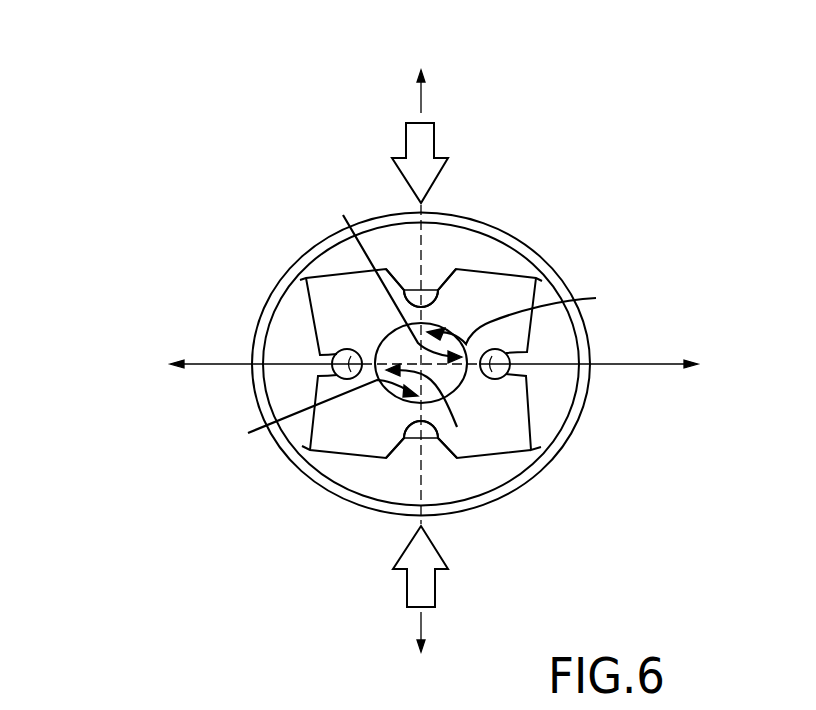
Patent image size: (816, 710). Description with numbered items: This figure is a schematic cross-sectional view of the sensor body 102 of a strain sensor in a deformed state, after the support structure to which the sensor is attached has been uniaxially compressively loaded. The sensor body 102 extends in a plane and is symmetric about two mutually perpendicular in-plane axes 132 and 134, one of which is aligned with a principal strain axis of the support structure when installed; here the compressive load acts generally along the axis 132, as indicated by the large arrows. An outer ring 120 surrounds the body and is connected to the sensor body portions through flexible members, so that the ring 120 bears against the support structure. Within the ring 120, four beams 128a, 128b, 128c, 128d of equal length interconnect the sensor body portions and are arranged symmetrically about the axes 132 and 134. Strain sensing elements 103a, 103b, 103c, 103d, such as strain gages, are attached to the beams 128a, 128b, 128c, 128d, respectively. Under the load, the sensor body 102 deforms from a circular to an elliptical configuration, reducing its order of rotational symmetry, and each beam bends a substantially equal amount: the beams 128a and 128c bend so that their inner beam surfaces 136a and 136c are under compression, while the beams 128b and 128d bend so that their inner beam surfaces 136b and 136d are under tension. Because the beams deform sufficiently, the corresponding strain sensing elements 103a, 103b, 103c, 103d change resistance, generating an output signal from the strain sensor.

The sensor body 102 is at (590, 260).
The ring 120 is at (502, 232).
The beam 128a is at (432, 288).
The beam 128b is at (345, 362).
The beam 128c is at (428, 444).
The beam 128d is at (494, 361).
The axis 132 is at (420, 345).
The axis 134 is at (456, 364).
The strain sensing element 103a is at (428, 323).
The strain sensing element 103b is at (375, 364).
The strain sensing element 103c is at (415, 402).
The strain sensing element 103d is at (470, 376).
The inner beam surface 136a is at (535, 312).
The inner beam surface 136b is at (444, 408).
The inner beam surface 136c is at (305, 415).
The inner beam surface 136d is at (381, 274).